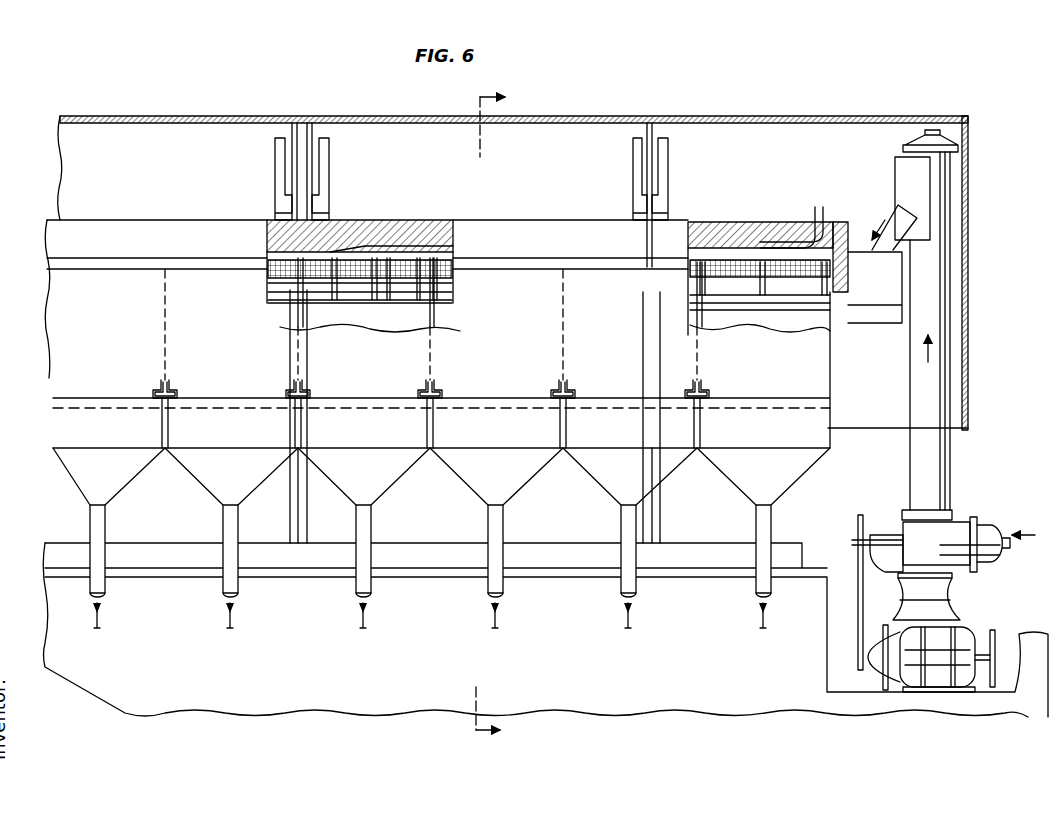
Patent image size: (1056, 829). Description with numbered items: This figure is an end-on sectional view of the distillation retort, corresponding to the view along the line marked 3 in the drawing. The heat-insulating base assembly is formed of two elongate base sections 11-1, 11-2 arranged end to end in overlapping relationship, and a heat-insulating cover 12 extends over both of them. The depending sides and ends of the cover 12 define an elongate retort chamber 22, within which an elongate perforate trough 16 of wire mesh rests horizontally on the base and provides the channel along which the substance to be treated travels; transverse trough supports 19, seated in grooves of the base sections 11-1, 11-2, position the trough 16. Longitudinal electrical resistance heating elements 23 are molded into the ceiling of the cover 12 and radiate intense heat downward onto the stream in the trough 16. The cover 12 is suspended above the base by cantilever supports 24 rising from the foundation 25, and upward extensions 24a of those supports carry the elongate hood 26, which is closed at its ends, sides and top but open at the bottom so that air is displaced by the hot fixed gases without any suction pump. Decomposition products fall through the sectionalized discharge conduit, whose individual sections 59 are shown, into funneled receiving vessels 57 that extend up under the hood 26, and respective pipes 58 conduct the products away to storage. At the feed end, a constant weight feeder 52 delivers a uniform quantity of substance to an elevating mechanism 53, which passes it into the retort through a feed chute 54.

The section line 3- 3 is at (478, 417).
The base section 11-1 is at (785, 297).
The base section 11-2 is at (278, 292).
The heat-insulating cover 12 is at (520, 246).
The perforate trough 16 is at (335, 288).
The transverse trough support 19 is at (430, 300).
The retort chamber 22 is at (410, 252).
The heating element 23 is at (352, 245).
The cantilever support 24 is at (290, 208).
The upward extension 24a is at (292, 160).
The foundation 25 is at (300, 695).
The hood 26 is at (968, 242).
The constant weight feeder 52 is at (1002, 520).
The elevating mechanism 53 is at (940, 378).
The feed chute 54 is at (898, 222).
The funneled receiving vessel 57 is at (208, 480).
The pipe 58 is at (223, 585).
The discharge conduit section 59 is at (150, 353).